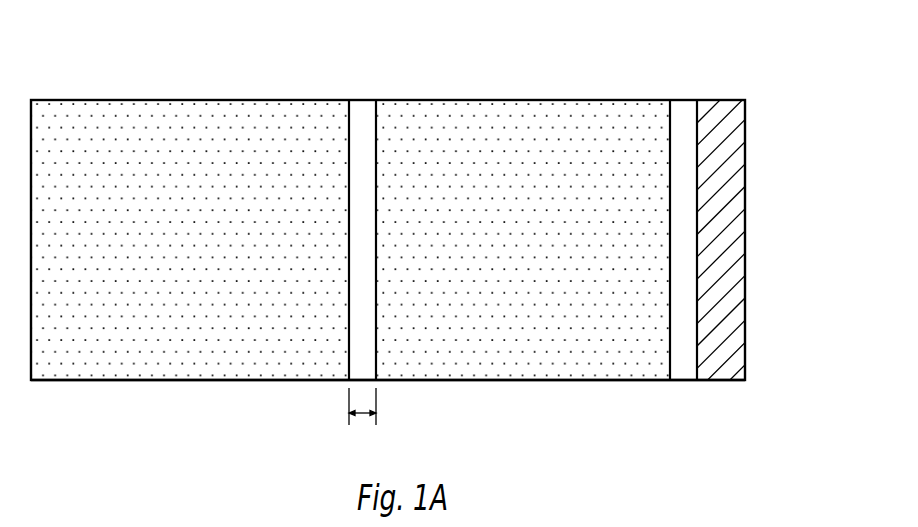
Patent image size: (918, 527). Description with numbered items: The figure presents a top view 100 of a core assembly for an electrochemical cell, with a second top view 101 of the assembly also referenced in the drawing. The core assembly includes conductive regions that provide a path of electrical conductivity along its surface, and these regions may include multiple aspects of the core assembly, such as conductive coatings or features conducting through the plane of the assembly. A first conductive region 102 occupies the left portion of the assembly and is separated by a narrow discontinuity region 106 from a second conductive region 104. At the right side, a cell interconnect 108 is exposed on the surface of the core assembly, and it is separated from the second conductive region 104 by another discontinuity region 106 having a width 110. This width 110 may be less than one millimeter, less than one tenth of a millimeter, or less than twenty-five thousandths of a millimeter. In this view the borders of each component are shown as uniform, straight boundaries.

The top view 100 is at (735, 42).
The top view 101 is at (728, 510).
The first conductive region 102 is at (192, 108).
The second conductive region 104 is at (535, 113).
The discontinuity region 106 is at (362, 108).
The cell interconnect 108 is at (737, 224).
The width 110 is at (361, 416).